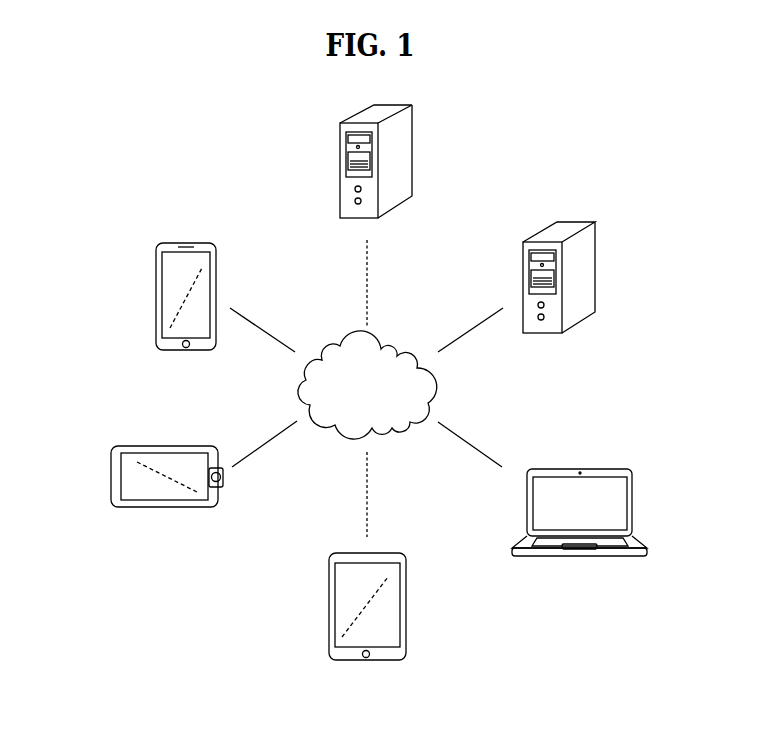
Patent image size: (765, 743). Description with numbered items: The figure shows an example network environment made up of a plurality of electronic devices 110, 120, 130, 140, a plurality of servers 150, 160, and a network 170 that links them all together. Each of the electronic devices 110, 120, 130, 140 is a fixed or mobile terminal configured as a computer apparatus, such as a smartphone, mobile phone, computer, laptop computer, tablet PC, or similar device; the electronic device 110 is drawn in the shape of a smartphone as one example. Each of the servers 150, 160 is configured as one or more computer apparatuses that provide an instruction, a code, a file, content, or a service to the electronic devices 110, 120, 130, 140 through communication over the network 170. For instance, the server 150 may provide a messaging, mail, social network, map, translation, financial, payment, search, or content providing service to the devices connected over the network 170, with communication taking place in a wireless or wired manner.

The electronic device 110 is at (156, 297).
The electronic device 120 is at (111, 475).
The electronic device 130 is at (406, 607).
The electronic device 140 is at (633, 503).
The server 150 is at (595, 266).
The server 160 is at (412, 150).
The network 170 is at (390, 345).